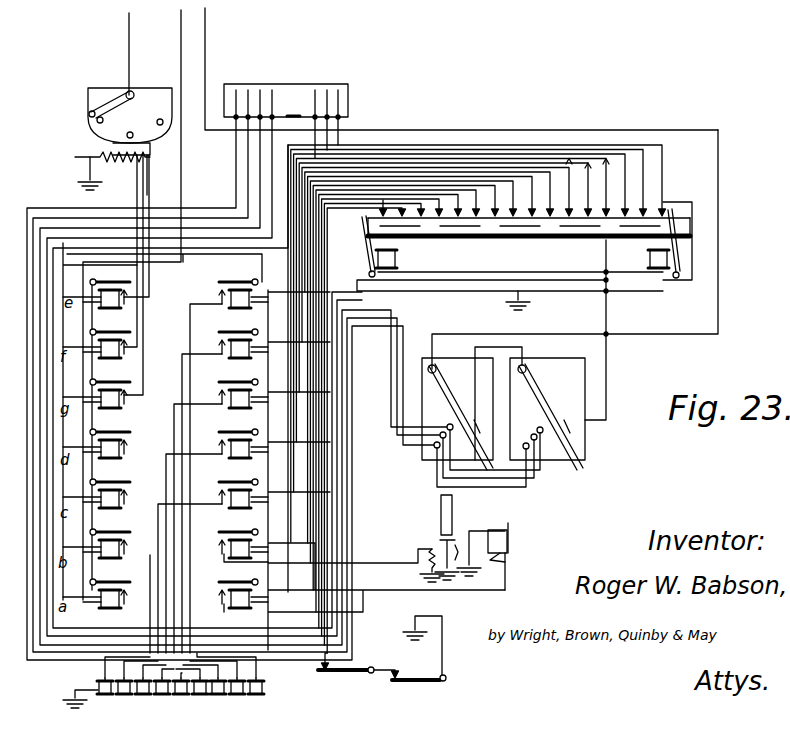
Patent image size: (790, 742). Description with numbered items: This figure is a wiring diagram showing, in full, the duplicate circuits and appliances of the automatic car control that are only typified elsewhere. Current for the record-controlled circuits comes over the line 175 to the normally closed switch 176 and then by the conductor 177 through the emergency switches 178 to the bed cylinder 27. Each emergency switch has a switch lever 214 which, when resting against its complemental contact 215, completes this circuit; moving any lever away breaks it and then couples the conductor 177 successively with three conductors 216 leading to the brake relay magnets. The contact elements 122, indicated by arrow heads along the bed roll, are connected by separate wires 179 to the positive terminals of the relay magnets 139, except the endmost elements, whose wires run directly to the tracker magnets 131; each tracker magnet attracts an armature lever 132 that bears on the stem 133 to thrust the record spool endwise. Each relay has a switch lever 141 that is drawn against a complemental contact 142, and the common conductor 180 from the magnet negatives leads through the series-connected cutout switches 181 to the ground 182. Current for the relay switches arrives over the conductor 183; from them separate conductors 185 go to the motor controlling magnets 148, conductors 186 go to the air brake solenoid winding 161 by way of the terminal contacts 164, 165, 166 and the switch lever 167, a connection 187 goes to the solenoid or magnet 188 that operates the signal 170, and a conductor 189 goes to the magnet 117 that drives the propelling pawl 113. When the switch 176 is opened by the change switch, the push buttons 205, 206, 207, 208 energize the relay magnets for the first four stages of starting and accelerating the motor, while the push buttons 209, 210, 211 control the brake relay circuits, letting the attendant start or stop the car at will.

The bed cylinder 27 is at (482, 240).
The propelling pawl 113 is at (508, 560).
The magnet 117 is at (492, 530).
The control contact wheel 122 is at (645, 201).
The tracker magnet 131 is at (398, 260).
The armature lever 132 is at (692, 236).
The stem 133 is at (684, 208).
The electro magnet 139 is at (108, 306).
The switch lever 141 is at (103, 282).
The complemental contact 142 is at (218, 300).
The motor controlling magnet 148 is at (215, 704).
The solenoid winding 161 is at (86, 172).
The terminal contact 164 is at (92, 118).
The terminal contact 165 is at (130, 132).
The terminal contact 166 is at (160, 126).
The switch lever 167 is at (118, 88).
The signal 170 is at (441, 508).
The line 175 is at (208, 44).
The normally closed switch 176 is at (296, 88).
The conductor 177 is at (466, 128).
The emergency switch 178 is at (452, 332).
The wire 179 is at (551, 144).
The common conductor 180 is at (296, 660).
The cutout switch 181 is at (350, 676).
The ground 182 is at (405, 636).
The conductor 183 is at (181, 34).
The conductor 185 is at (182, 426).
The conductor 186 is at (150, 200).
The connection 187 is at (372, 560).
The solenoid or magnet 188 is at (428, 566).
The conductor 189 is at (465, 592).
The push button switch 205 is at (272, 112).
The push button switch 206 is at (260, 88).
The push button switch 207 is at (248, 88).
The push button switch 208 is at (236, 88).
The push button switch 209 is at (315, 112).
The push button switch 210 is at (327, 88).
The push button switch 211 is at (338, 112).
The switch lever 214 is at (448, 392).
The complemental contact 215 is at (585, 462).
The conductor 216 is at (402, 370).